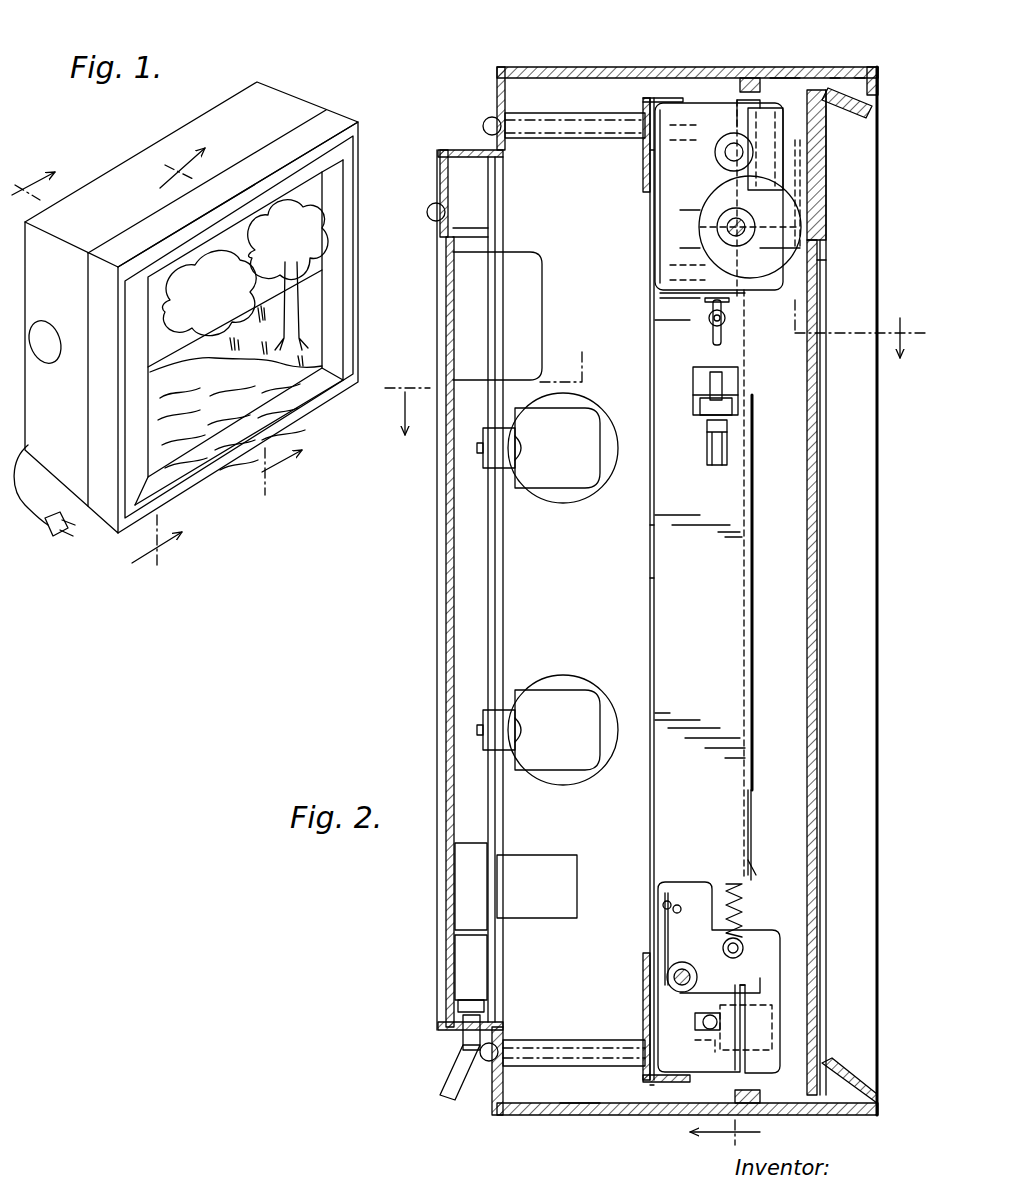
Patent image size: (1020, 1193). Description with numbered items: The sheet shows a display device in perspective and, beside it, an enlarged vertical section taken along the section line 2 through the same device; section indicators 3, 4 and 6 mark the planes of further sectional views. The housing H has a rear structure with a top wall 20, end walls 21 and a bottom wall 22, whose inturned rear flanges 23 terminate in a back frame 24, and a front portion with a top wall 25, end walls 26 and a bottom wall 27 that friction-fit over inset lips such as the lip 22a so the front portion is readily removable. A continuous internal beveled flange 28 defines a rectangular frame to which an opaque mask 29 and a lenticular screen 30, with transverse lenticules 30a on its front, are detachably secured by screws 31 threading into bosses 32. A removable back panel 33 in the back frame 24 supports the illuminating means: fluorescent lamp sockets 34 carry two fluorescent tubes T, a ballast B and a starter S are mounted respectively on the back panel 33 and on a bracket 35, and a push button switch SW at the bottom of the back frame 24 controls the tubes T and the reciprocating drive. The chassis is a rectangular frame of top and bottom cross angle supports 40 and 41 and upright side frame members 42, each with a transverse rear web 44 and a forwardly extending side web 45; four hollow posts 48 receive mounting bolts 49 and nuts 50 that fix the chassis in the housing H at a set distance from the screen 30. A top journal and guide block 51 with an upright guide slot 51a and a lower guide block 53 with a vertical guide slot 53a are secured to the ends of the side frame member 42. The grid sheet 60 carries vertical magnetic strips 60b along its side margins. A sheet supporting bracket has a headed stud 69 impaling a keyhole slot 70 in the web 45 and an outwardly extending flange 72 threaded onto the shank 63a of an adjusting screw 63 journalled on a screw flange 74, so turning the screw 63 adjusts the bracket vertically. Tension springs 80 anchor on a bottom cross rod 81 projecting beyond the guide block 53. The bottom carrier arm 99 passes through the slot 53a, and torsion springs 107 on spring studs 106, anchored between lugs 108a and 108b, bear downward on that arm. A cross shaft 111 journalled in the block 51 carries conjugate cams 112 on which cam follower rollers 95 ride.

In FIG. 1, the top wall 20 is at (280, 105).
In FIG. 2, the top wall 20 is at (555, 67).
In FIG. 1, the housing H is at (276, 75).
In FIG. 1, the end walls 21 is at (44, 471).
In FIG. 2, the end walls 21 is at (661, 306).
In FIG. 2, the bottom wall 22 is at (570, 1115).
In FIG. 2, the inset lip 22a is at (660, 1115).
In FIG. 2, the inturned rear flanges 23 is at (497, 92).
In FIG. 1, the back frame 24 is at (356, 200).
In FIG. 2, the back frame 24 is at (440, 200).
In FIG. 2, the top wall 25 is at (785, 67).
In FIG. 1, the end walls 26 is at (98, 308).
In FIG. 2, the bottom wall 27 is at (870, 1120).
In FIG. 1, the continuous internal flange 28 is at (352, 147).
In FIG. 2, the continuous internal flange 28 is at (860, 113).
In FIG. 1, the rectangular opaque mask 29 is at (337, 185).
In FIG. 2, the rectangular opaque mask 29 is at (820, 205).
In FIG. 1, the lenticular screen 30 is at (305, 268).
In FIG. 2, the lenticular screen 30 is at (822, 255).
In FIG. 2, the screen lenticules 30a is at (820, 287).
In FIG. 2, the screw 31 is at (832, 67).
In FIG. 2, the boss 32 is at (858, 67).
In FIG. 2, the removable back panel 33 is at (446, 522).
In FIG. 2, the fluorescent lamp sockets 34 is at (547, 589).
In FIG. 2, the bracket 35 is at (475, 225).
In FIG. 2, the top cross frame angle support 40 is at (643, 100).
In FIG. 2, the bottom cross frame angle support 41 is at (645, 1010).
In FIG. 2, the upright side frame member 42 is at (648, 578).
In FIG. 2, the transverse rear web 44 is at (648, 525).
In FIG. 2, the forwardly extending side web 45 is at (700, 636).
In FIG. 2, the heavy hollow posts 48 is at (557, 98).
In FIG. 2, the mounting bolts 49 is at (483, 126).
In FIG. 2, the nuts 50 is at (648, 155).
In FIG. 2, the top journal and guide block 51 is at (720, 228).
In FIG. 2, the upright guide slot 51a is at (745, 112).
In FIG. 2, the lower guide block 53 is at (690, 880).
In FIG. 2, the vertical guide slot 53a is at (735, 990).
In FIG. 2, the grid sheet 60 is at (752, 828).
In FIG. 2, the magnetic strips 60b is at (752, 588).
In FIG. 2, the adjusting screw 63 is at (705, 455).
In FIG. 2, the threaded shank 63a is at (725, 378).
In FIG. 2, the headed stud 69 is at (708, 320).
In FIG. 2, the keyhole slot 70 is at (715, 340).
In FIG. 2, the outwardly extending flange 72 is at (700, 400).
In FIG. 2, the screw flange 74 is at (707, 440).
In FIG. 2, the tension springs 80 is at (742, 908).
In FIG. 2, the bottom cross rod 81 is at (742, 940).
In FIG. 2, the cam follower roller 95 is at (720, 160).
In FIG. 2, the carrier arm 99 is at (735, 1050).
In FIG. 2, the spring studs 106 is at (667, 976).
In FIG. 2, the torsion springs 107 is at (665, 945).
In FIG. 2, the anchoring lug 108a is at (662, 912).
In FIG. 2, the anchoring lug 108b is at (672, 900).
In FIG. 2, the cross shaft 111 is at (719, 200).
In FIG. 2, the conjugate cams 112 is at (745, 205).
In FIG. 1, the section line 2— 2 is at (102, 357).
In FIG. 2, the section line 3 is at (725, 1132).
In FIG. 2, the section line 4 is at (655, 362).
In FIG. 1, the section line 6 is at (223, 323).
In FIG. 2, the ballast B is at (528, 262).
In FIG. 2, the starter S is at (530, 868).
In FIG. 2, the push button switch SW is at (462, 1045).
In FIG. 2, the fluorescent tubes T is at (580, 405).